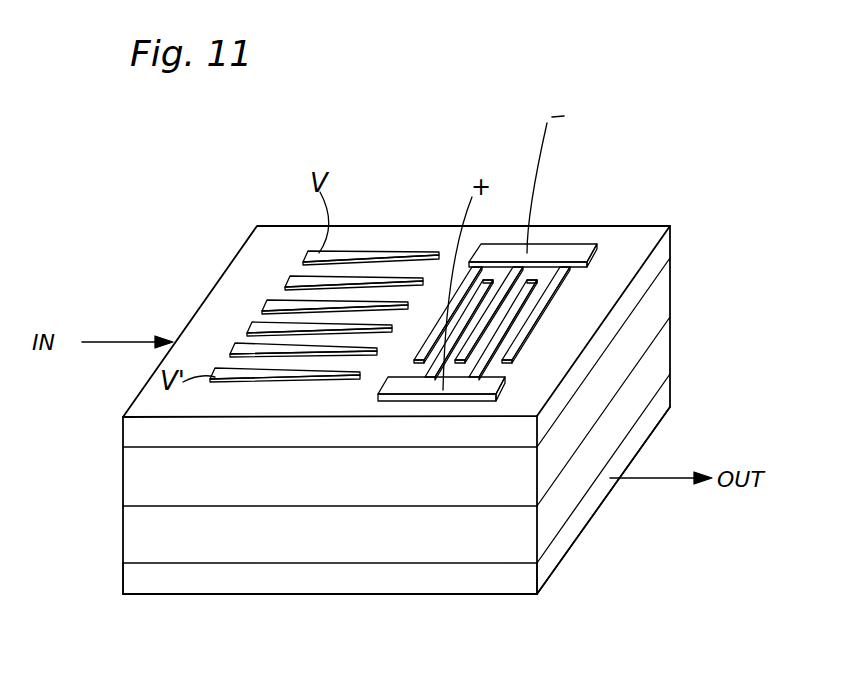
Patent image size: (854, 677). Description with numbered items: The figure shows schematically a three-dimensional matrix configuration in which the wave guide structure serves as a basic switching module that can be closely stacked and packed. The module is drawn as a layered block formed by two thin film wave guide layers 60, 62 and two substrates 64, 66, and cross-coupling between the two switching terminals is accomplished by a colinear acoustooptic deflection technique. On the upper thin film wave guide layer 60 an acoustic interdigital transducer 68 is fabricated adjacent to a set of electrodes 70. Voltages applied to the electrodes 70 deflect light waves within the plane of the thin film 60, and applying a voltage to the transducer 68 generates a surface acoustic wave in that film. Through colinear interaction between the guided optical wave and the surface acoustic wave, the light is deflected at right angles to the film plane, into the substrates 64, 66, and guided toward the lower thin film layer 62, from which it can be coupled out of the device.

The thin film wave guide layer 60 is at (663, 252).
The thin film wave guide layer 62 is at (643, 432).
The substrate 64 is at (632, 345).
The substrate 66 is at (637, 392).
The acoustic interdigital transducer 68 is at (554, 322).
The electrodes 70 is at (368, 277).